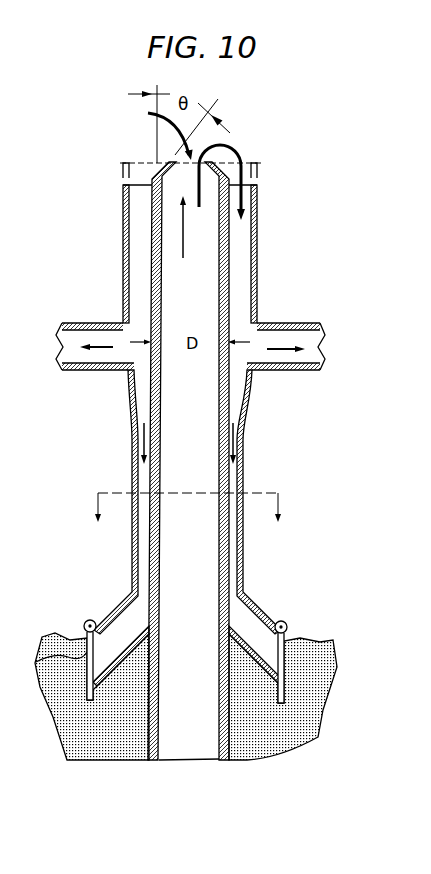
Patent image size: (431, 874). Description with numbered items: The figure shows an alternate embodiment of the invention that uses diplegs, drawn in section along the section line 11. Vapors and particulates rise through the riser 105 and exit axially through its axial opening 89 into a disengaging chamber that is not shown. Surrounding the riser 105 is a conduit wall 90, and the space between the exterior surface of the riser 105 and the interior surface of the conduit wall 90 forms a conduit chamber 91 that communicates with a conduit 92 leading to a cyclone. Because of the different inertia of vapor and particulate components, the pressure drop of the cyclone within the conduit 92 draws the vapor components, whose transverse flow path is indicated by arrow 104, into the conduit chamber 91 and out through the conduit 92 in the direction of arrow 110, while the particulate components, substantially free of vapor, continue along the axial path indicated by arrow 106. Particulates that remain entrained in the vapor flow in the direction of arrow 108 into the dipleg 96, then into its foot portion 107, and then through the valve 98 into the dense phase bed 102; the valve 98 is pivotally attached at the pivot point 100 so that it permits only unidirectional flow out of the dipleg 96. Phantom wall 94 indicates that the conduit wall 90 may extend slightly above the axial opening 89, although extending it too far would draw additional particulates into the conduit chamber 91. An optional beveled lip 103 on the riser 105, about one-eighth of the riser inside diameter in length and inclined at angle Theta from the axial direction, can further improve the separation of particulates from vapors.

The axial opening 89 is at (160, 132).
The conduit wall 90 is at (257, 248).
The conduit chamber 91 is at (149, 280).
The conduit 92 is at (292, 326).
The phantom wall 94 is at (123, 174).
The dipleg 96 is at (131, 548).
The valve 98 is at (43, 679).
The pivot point 100 is at (84, 628).
The dense phase bed 102 is at (60, 717).
The beveled lip 103 is at (163, 167).
The arrow 104 is at (258, 169).
The riser 105 is at (140, 757).
The arrow 106 is at (184, 258).
The foot portion 107 is at (116, 603).
The arrow 108 is at (133, 438).
The arrow 110 is at (82, 371).
The section line 11- 11 is at (189, 495).